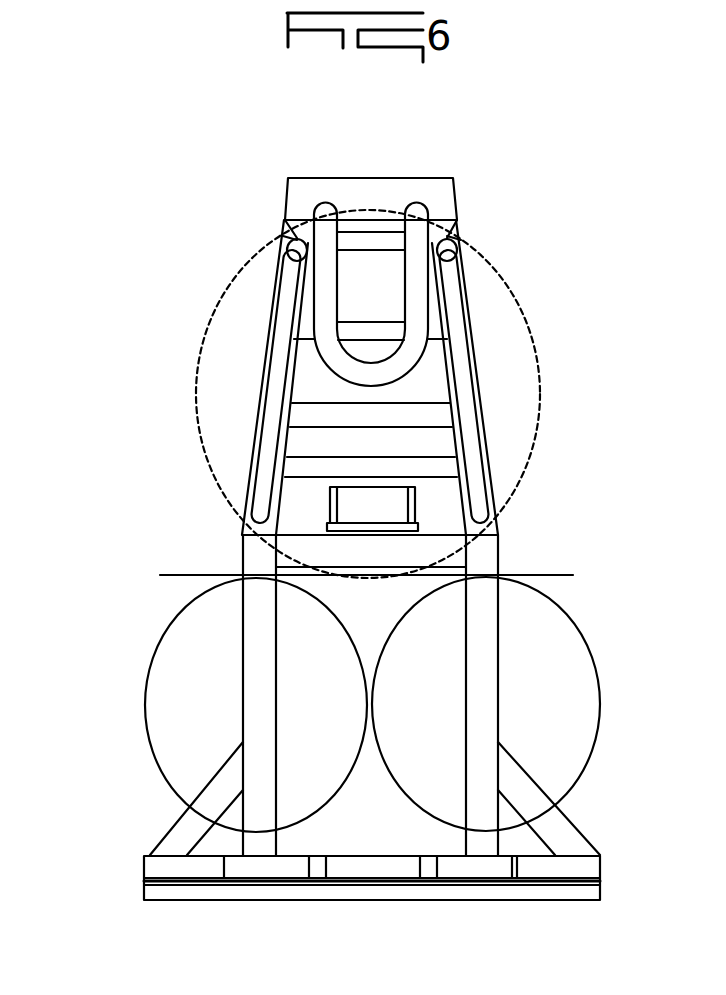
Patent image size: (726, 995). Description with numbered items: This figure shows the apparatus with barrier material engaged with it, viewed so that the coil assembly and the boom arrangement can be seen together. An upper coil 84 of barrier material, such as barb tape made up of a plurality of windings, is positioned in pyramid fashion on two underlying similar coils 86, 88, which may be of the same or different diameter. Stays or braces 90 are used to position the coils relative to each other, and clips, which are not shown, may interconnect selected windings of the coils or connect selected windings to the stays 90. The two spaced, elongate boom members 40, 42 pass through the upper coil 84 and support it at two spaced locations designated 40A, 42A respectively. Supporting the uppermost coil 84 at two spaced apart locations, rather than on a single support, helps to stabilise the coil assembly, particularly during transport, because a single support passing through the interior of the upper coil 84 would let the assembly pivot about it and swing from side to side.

The boom member 40 is at (414, 516).
The support location 40A is at (482, 232).
The boom member 42 is at (296, 238).
The support location 42A is at (284, 243).
The upper coil 84 is at (530, 327).
The underlying coil 86 is at (148, 670).
The underlying coil 88 is at (598, 673).
The stays or braces 90 is at (557, 575).